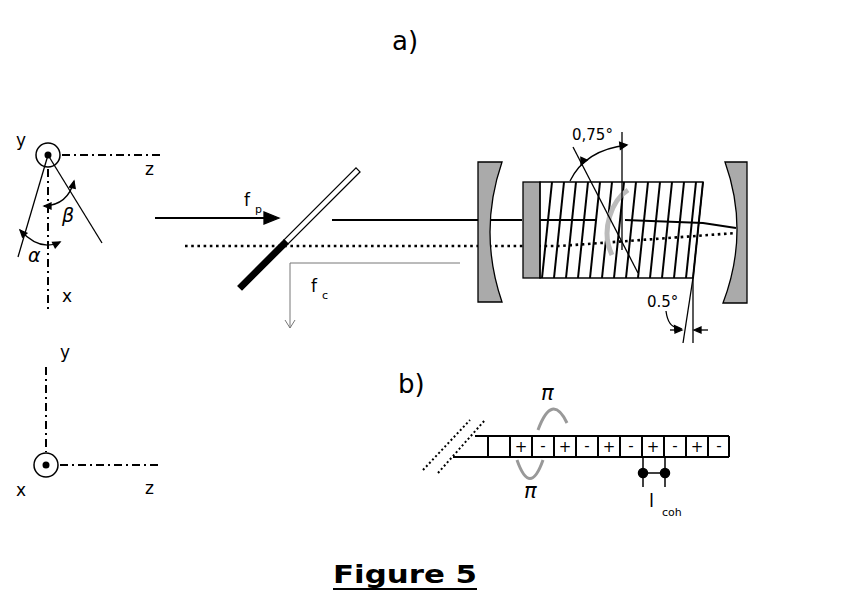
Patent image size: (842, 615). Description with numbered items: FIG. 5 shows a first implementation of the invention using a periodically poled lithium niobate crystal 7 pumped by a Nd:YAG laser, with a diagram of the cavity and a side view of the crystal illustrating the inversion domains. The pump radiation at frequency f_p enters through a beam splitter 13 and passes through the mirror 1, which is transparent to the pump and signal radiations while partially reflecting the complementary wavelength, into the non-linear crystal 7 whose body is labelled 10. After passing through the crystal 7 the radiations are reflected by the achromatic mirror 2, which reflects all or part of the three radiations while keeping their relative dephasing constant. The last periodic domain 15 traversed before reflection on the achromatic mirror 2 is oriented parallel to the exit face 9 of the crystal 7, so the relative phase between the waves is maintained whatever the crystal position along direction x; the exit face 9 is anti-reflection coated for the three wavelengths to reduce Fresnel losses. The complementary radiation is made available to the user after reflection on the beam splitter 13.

The mirror 1 is at (488, 162).
The achromatic mirror 2 is at (723, 163).
The non-linear crystal 7 is at (667, 182).
The exit face 9 is at (698, 257).
The nonlinear optical crystal 10 is at (525, 182).
The beam splitter 13 is at (333, 187).
The last periodic domain 15 is at (697, 182).